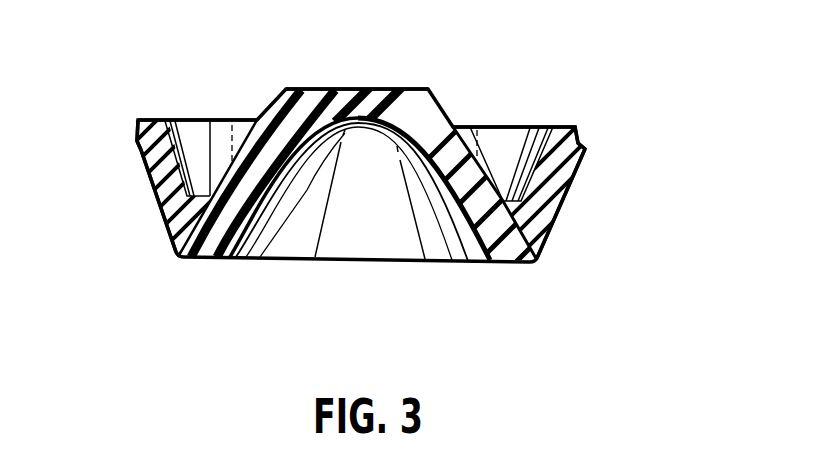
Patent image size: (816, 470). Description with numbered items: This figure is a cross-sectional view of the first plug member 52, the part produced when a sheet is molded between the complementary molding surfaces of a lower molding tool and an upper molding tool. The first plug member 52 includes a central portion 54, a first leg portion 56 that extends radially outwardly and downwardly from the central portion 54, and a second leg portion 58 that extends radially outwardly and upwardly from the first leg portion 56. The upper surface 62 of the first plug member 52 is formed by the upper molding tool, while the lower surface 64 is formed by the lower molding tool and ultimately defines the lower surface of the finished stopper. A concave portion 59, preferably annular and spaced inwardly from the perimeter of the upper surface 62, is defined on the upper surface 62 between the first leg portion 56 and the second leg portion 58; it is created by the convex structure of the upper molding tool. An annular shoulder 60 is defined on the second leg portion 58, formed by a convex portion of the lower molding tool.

The first plug member 52 is at (540, 253).
The central portion 54 is at (356, 89).
The first leg portion 56 is at (262, 184).
The second leg portion 58 is at (162, 210).
The concave portion 59 is at (206, 155).
The annular shoulder 60 is at (140, 140).
The upper surface 62 is at (272, 106).
The lower surface 64 is at (440, 233).